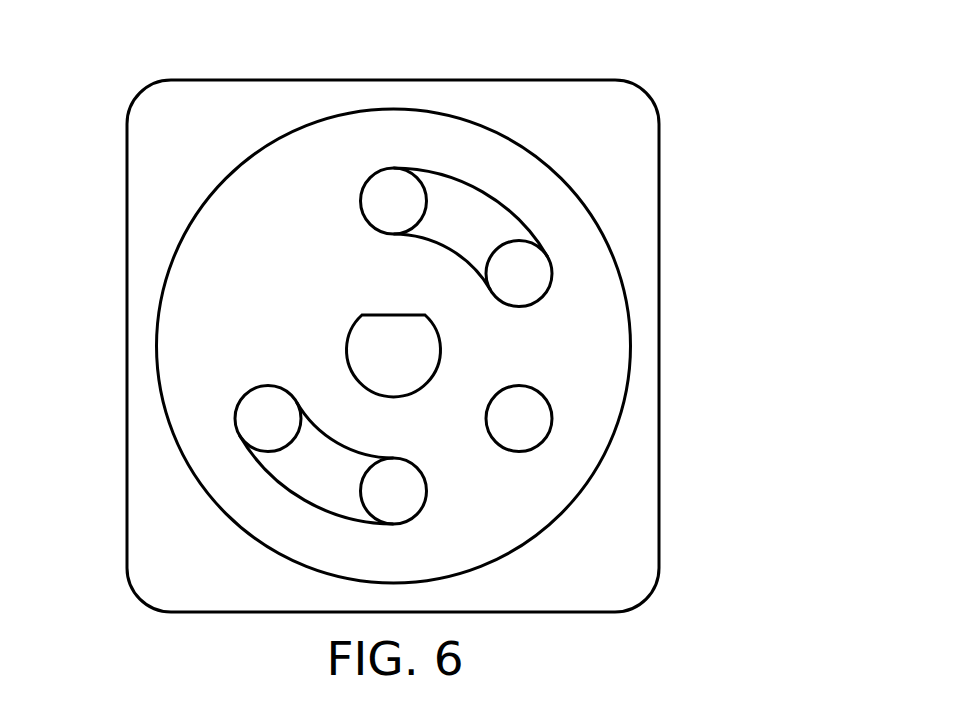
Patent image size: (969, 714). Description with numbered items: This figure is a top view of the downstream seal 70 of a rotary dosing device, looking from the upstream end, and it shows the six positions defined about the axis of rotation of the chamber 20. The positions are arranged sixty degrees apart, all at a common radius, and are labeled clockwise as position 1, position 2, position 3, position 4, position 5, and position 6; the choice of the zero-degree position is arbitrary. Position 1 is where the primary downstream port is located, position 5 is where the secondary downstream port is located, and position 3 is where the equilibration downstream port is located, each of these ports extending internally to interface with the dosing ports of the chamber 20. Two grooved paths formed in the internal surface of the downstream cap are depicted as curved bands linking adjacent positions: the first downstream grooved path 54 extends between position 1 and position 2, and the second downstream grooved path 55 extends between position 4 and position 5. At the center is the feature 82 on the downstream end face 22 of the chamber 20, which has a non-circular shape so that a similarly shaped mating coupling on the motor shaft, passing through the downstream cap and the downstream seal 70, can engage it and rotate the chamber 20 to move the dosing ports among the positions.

The chamber 20 is at (213, 190).
The downstream end face 22 is at (195, 300).
The first downstream grooved path 54 is at (467, 222).
The second downstream grooved path 55 is at (318, 479).
The downstream seal 70 is at (638, 116).
The feature 82 is at (408, 356).
The position 1 is at (394, 176).
The position 2 is at (538, 271).
The position 3 is at (536, 424).
The position 4 is at (394, 517).
The position 5 is at (257, 432).
The position 6 is at (217, 247).